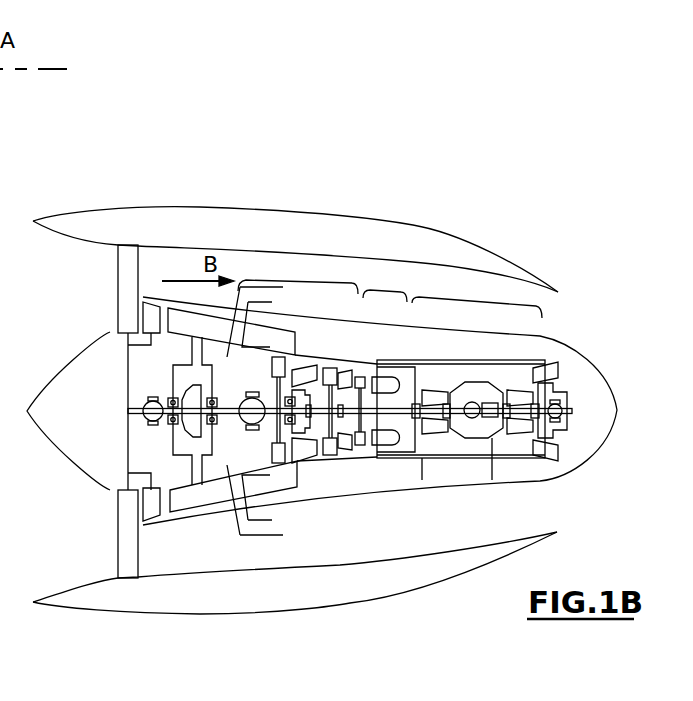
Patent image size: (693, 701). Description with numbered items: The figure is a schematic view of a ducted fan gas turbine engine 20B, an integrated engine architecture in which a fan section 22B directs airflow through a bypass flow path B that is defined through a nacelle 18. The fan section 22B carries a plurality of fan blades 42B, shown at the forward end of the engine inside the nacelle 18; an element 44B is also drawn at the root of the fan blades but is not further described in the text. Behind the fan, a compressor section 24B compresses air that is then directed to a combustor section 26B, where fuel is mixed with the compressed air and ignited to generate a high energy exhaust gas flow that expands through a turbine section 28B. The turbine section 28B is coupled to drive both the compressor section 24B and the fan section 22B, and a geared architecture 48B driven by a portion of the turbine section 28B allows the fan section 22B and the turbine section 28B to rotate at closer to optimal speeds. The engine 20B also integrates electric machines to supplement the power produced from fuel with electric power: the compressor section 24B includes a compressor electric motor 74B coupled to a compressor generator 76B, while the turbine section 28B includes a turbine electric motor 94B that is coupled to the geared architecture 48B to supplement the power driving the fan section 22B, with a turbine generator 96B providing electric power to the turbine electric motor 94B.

The nacelle 18 is at (287, 232).
The engine 20B is at (473, 107).
The fan section 22B is at (125, 219).
The compressor section 24B is at (476, 302).
The combustor section 26B is at (380, 290).
The turbine section 28B is at (305, 280).
The fan blades 42B is at (124, 278).
The fan blade root / platform 44B is at (147, 315).
The geared architecture 48B is at (189, 394).
The compressor electric motor 74B is at (558, 405).
The compressor generator 76B is at (474, 407).
The turbine electric motor 94B is at (244, 423).
The turbine generator 96B is at (147, 419).